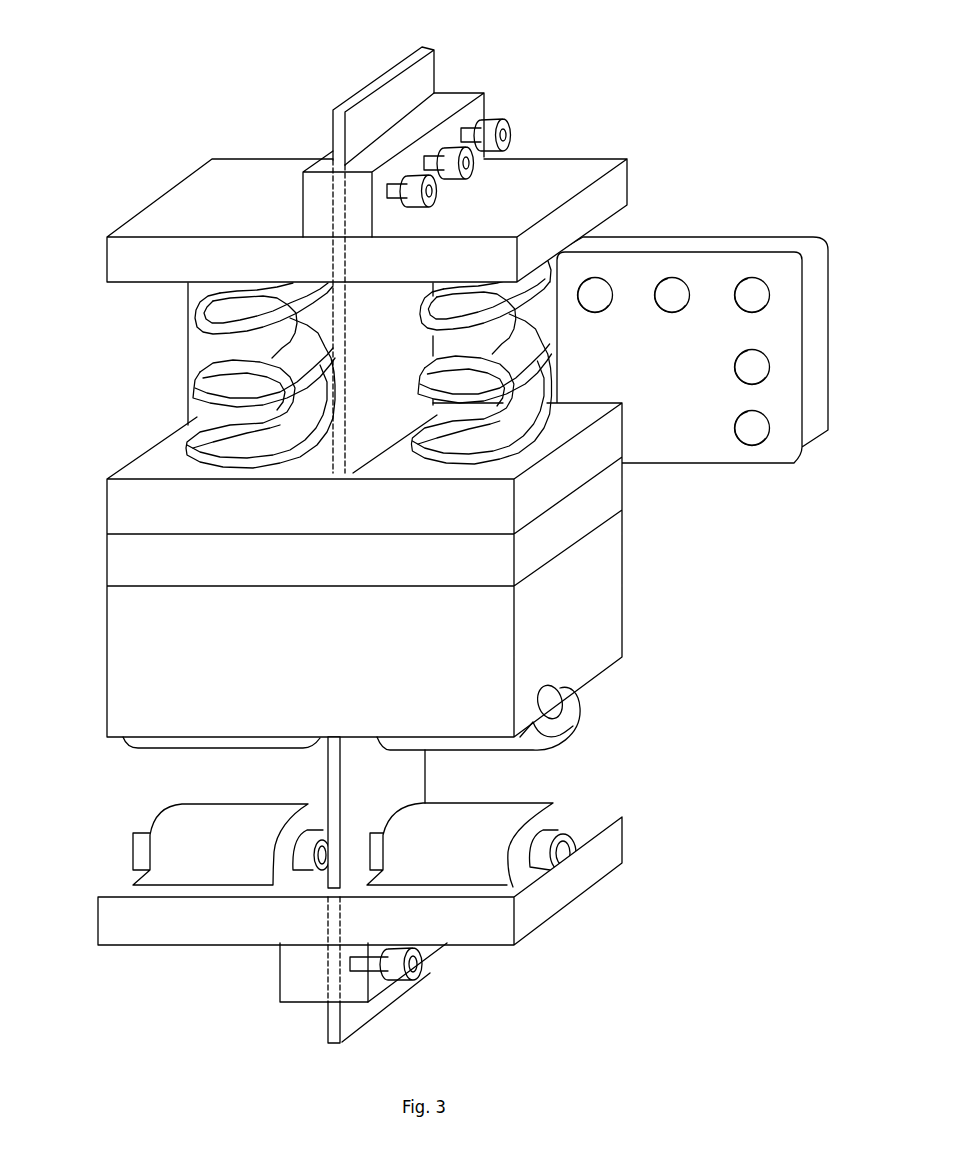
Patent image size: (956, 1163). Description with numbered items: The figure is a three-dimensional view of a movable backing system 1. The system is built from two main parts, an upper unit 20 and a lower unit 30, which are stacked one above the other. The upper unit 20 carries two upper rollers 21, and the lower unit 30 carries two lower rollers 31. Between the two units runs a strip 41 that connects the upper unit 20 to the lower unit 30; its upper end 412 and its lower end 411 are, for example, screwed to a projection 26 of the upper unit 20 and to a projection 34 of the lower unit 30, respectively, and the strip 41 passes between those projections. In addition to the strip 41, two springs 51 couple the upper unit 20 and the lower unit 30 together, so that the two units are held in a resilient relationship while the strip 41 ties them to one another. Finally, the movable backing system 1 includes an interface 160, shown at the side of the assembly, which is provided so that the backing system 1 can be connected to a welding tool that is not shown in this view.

The movable backing system 1 is at (118, 152).
The upper unit 20 is at (143, 675).
The upper rollers 21 is at (170, 743).
The projection of the upper unit 26 is at (440, 135).
The lower unit 30 is at (215, 922).
The lower rollers 31 is at (187, 860).
The projection of the lower unit 34 is at (300, 979).
The strip 41 is at (390, 792).
The springs 51 is at (200, 385).
The interface 160 is at (707, 433).
The lower end of the strip 411 is at (357, 1010).
The upper end of the strip 412 is at (400, 90).